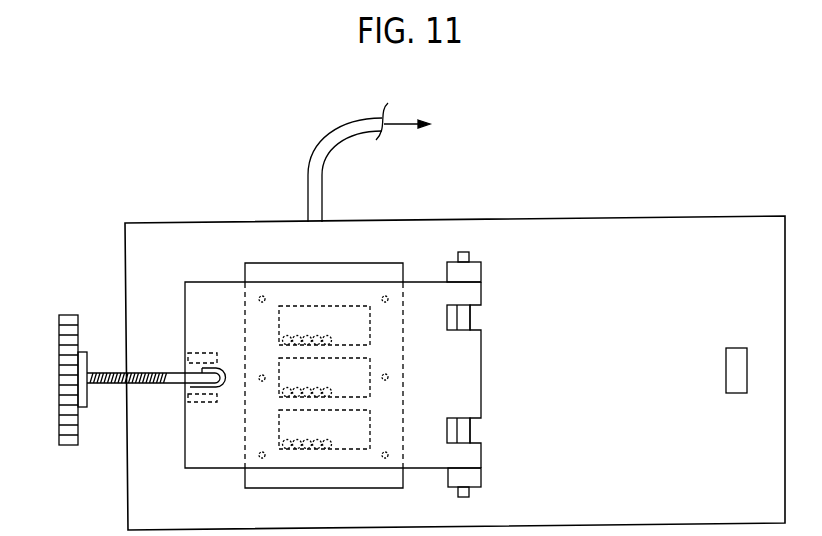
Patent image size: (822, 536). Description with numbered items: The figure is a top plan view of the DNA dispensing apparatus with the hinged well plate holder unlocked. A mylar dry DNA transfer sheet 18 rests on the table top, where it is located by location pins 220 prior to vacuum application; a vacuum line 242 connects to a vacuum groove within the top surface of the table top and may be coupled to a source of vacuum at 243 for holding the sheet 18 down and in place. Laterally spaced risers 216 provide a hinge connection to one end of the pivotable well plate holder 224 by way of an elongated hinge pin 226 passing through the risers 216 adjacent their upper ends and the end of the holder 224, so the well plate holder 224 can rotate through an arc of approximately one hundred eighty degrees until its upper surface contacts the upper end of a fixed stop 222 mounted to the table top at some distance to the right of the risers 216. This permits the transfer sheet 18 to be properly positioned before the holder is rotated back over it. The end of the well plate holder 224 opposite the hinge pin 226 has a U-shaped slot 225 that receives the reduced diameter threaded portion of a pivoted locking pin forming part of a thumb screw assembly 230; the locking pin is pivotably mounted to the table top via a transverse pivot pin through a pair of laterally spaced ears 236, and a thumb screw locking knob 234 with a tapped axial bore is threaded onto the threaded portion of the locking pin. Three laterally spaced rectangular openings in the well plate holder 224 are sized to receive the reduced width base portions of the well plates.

The mylar dry DNA transfer sheet 18 is at (353, 478).
The risers 216 is at (474, 272).
The location pins 220 is at (261, 296).
The fixed stop 222 is at (733, 352).
The well plate holder 224 is at (498, 359).
The U-shaped slot 225 is at (188, 388).
The hinge pin 226 is at (468, 254).
The thumb screw assembly 230 is at (129, 372).
The thumb screw locking knob 234 is at (68, 447).
The ears 236 is at (203, 352).
The vacuum line 242 is at (316, 187).
The source of vacuum 243 is at (395, 117).